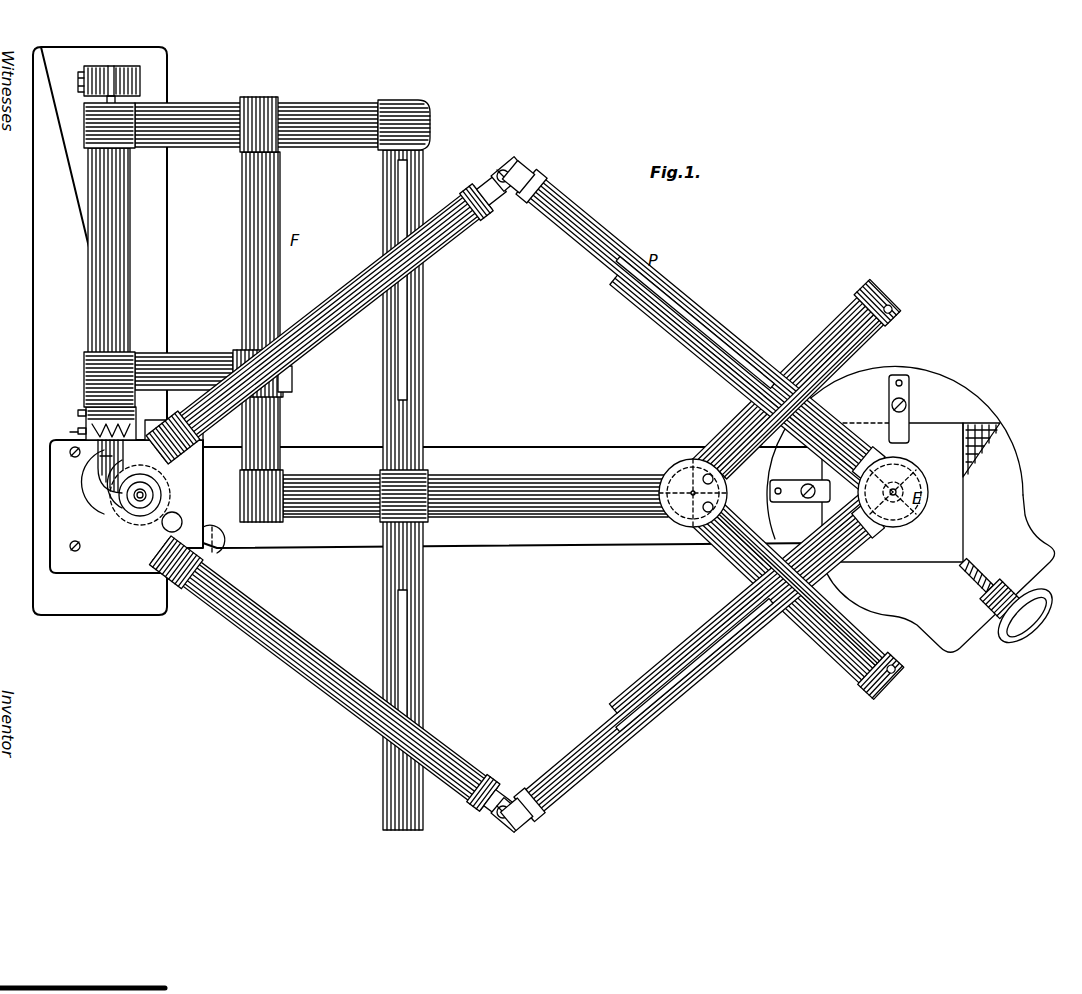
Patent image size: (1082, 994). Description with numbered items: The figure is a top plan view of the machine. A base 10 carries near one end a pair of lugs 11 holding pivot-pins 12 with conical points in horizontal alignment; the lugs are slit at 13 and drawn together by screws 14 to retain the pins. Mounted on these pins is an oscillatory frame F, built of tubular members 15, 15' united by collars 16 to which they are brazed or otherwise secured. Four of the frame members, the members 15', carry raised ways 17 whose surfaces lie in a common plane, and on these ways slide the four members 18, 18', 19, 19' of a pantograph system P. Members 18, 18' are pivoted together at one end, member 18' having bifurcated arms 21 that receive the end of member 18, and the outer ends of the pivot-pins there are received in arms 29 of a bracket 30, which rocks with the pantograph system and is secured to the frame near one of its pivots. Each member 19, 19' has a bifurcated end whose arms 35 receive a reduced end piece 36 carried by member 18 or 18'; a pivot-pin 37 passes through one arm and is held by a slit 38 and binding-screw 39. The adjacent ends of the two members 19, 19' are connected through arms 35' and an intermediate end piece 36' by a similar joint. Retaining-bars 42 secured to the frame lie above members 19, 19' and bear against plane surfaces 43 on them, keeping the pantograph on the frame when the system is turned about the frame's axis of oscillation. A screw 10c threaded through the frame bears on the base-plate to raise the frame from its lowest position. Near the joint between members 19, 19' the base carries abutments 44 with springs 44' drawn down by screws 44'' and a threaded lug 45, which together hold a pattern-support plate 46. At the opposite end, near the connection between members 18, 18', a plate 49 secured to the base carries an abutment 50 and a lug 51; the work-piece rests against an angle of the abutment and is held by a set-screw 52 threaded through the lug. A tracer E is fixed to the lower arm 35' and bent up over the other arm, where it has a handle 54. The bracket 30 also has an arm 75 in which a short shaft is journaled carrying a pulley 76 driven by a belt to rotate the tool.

The base 10 is at (427, 331).
The screw 10c is at (678, 474).
The lugs 11 is at (118, 98).
The pivot-pins 12 is at (140, 108).
The slit 13 is at (112, 72).
The screws 14 is at (78, 80).
The tubular members 15 is at (378, 295).
The tubular members 15' is at (636, 450).
The collars 16 is at (84, 122).
The raised ways 17 is at (412, 302).
The pantograph member 18 is at (320, 323).
The pantograph member 18' is at (324, 674).
The pantograph member 19 is at (711, 334).
The pantograph member 19' is at (710, 653).
The bifurcated arms 21 is at (182, 452).
The arms 29 is at (104, 506).
The bracket 30 is at (92, 483).
The arms 35 is at (494, 487).
The arms 35' is at (901, 464).
The reduced end piece 36 is at (501, 496).
The intermediate end piece 36' is at (893, 525).
The pivot-pin 37 is at (511, 171).
The slit 38 is at (520, 175).
The binding-screw 39 is at (501, 167).
The retaining-bars 42 is at (814, 330).
The plane surfaces 43 is at (735, 351).
The abutments 44 is at (895, 451).
The springs 44' is at (854, 438).
The screws 44'' is at (852, 448).
The threaded lug 45 is at (1003, 584).
The plate 46 is at (950, 505).
The plate 49 is at (104, 573).
The abutment 50 is at (160, 463).
The lug 51 is at (178, 514).
The set-screw 52 is at (211, 533).
The handle 54 is at (898, 468).
The arm 75 is at (100, 457).
The pulley 76 is at (160, 491).